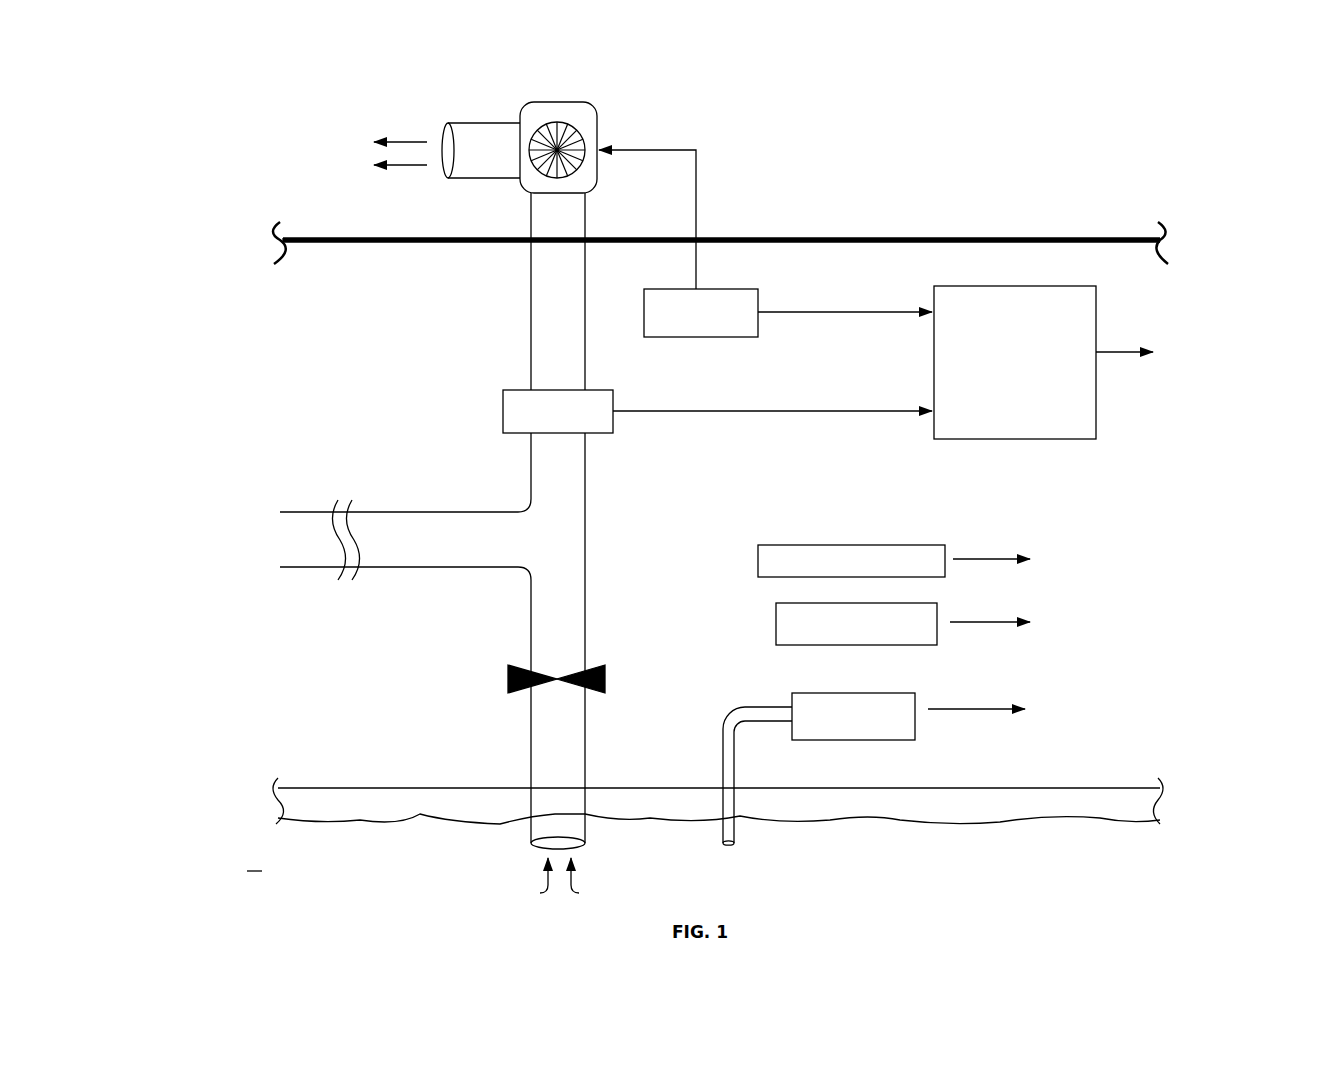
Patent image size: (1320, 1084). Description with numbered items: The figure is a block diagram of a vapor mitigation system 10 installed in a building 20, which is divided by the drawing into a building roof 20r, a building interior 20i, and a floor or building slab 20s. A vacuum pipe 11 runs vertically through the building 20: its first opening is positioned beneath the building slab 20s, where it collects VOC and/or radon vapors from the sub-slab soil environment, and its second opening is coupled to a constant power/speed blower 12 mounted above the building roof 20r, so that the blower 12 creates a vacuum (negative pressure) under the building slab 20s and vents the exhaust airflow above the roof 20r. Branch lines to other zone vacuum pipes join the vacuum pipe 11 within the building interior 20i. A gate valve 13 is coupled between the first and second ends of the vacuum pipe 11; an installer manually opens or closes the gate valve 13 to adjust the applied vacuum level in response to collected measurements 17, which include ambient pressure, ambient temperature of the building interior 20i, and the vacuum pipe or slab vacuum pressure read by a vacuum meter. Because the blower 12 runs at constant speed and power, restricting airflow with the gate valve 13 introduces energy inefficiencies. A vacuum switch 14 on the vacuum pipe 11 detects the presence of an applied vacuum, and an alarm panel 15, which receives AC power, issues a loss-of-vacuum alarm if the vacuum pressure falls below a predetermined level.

The vapor mitigation system 10 is at (1114, 135).
The vacuum pipe 11 is at (530, 774).
The constant power/speed blower 12 is at (603, 117).
The gate valve 13 is at (502, 671).
The vacuum switch 14 is at (499, 386).
The alarm panel 15 is at (1098, 362).
The collected measurements 17 is at (1043, 533).
The building 20 is at (222, 215).
The building roof 20r is at (262, 238).
The building interior 20i is at (262, 311).
The building slab 20s is at (262, 793).